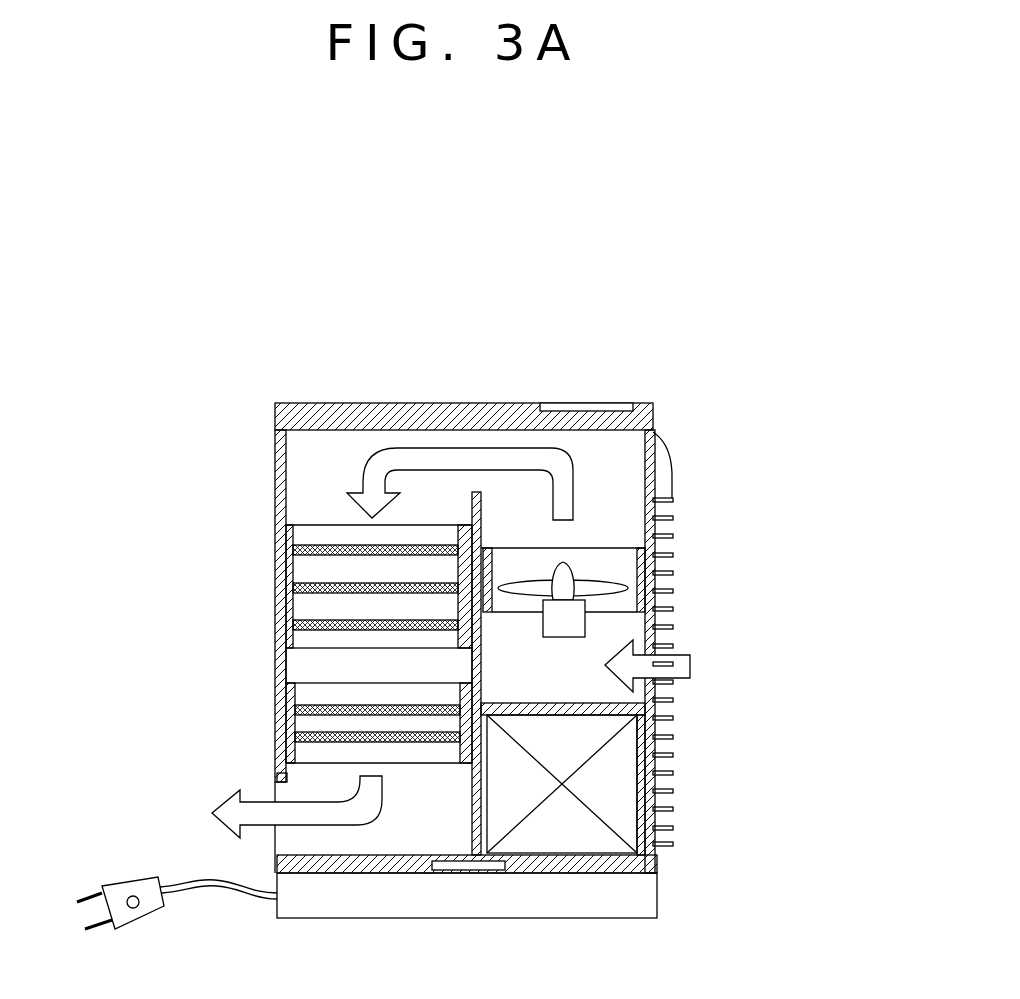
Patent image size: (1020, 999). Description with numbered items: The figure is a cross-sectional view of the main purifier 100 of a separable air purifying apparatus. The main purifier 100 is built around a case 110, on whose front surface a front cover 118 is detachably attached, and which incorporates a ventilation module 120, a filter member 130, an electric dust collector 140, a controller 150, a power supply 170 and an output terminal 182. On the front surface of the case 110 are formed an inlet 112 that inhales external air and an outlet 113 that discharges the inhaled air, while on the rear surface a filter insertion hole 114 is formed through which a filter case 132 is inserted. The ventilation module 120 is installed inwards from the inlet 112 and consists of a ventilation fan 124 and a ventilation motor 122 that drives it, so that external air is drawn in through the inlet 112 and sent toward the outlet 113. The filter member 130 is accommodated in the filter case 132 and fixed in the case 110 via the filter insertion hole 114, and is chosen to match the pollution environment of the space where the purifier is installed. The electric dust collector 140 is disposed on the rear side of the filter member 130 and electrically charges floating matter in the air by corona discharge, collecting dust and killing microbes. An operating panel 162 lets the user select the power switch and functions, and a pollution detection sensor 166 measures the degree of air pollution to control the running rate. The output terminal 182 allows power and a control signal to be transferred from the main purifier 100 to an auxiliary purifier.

The main purifier 100 is at (666, 918).
The case 110 is at (278, 402).
The inlet 112 is at (643, 690).
The outlet 113 is at (303, 793).
The filter insertion hole 114 is at (280, 637).
The front cover 118 is at (680, 844).
The ventilation module 120 is at (670, 588).
The ventilation motor 122 is at (567, 622).
The ventilation fan 124 is at (607, 587).
The filter member 130 is at (307, 582).
The filter case 132 is at (277, 598).
The electric dust collector 140 is at (287, 698).
The controller 150 is at (630, 753).
The operating panel 162 is at (603, 405).
The pollution detection sensor 166 is at (660, 789).
The power supply 170 is at (123, 878).
The output terminal 182 is at (460, 870).